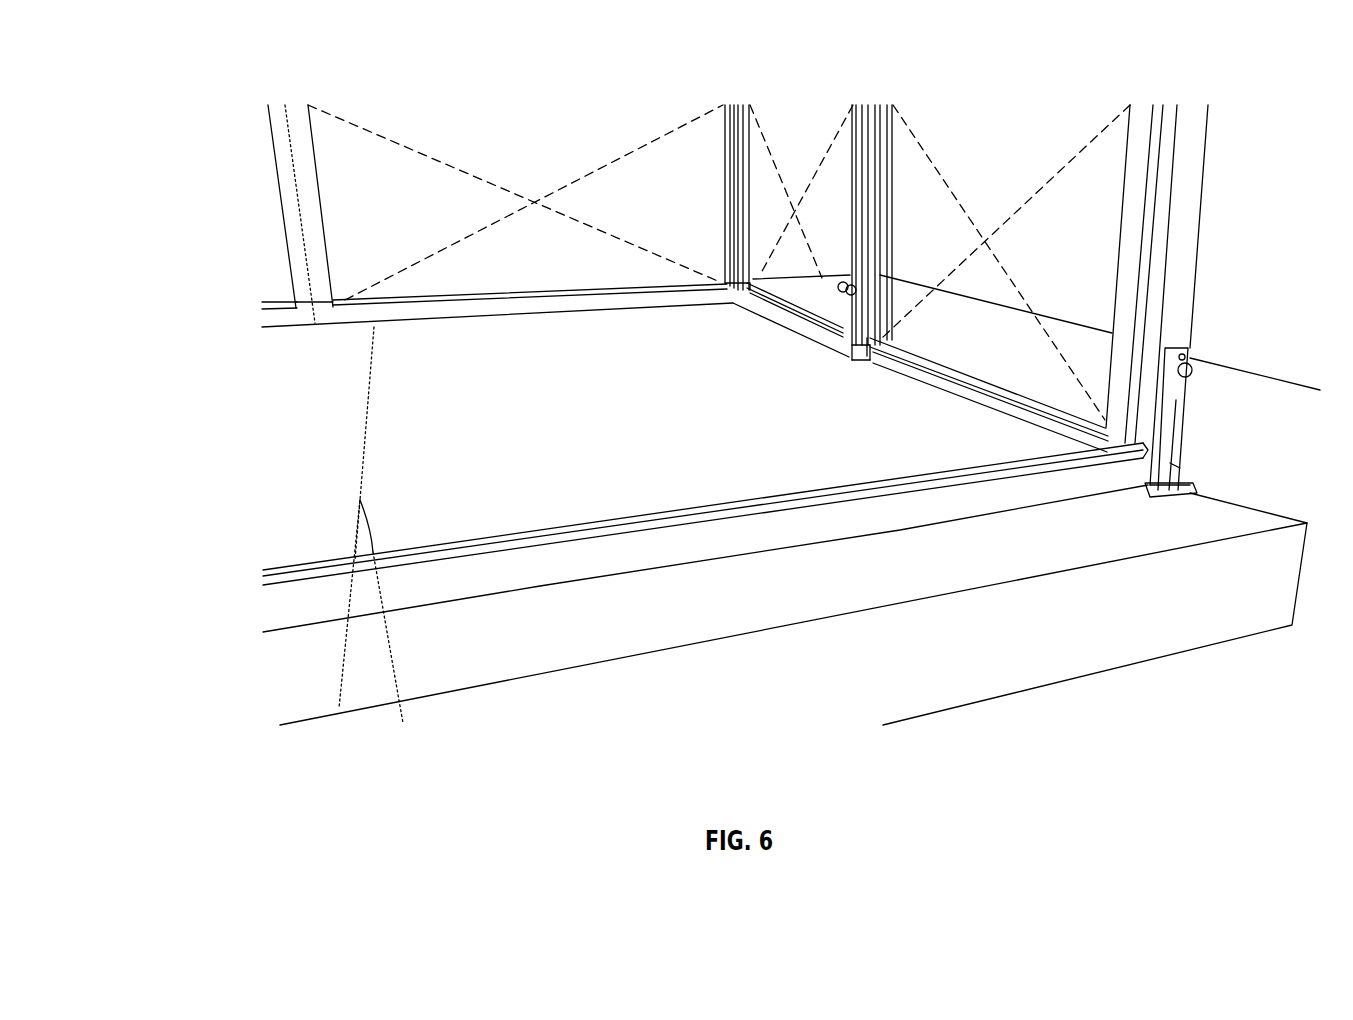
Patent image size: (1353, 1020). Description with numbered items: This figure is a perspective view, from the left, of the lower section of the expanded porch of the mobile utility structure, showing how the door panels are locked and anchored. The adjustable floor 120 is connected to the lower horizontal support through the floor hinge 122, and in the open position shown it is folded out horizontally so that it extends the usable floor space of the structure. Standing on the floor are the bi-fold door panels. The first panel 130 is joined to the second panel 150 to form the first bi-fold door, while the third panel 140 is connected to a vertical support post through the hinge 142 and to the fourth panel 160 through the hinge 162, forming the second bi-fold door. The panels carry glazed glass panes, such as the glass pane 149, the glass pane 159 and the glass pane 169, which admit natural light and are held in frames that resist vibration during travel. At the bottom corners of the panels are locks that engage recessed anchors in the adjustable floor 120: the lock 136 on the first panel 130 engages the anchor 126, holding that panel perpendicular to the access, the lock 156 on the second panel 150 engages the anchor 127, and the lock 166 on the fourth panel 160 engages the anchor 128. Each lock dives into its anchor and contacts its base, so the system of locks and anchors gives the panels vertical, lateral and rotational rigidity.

The adjustable floor 120 is at (1083, 650).
The floor hinge 122 is at (343, 682).
The anchor 126 is at (1192, 488).
The anchor 127 is at (858, 363).
The anchor 128 is at (828, 348).
The first panel 130 is at (888, 511).
The lock 136 is at (1187, 348).
The third panel 140 is at (488, 292).
The hinge 142 is at (297, 182).
The glass pane 149 is at (515, 202).
The second panel 150 is at (947, 360).
The lock 156 is at (858, 285).
The glass pane 159 is at (1006, 262).
The fourth panel 160 is at (750, 302).
The hinge 162 is at (723, 122).
The lock 166 is at (850, 278).
The glass pane 169 is at (801, 191).